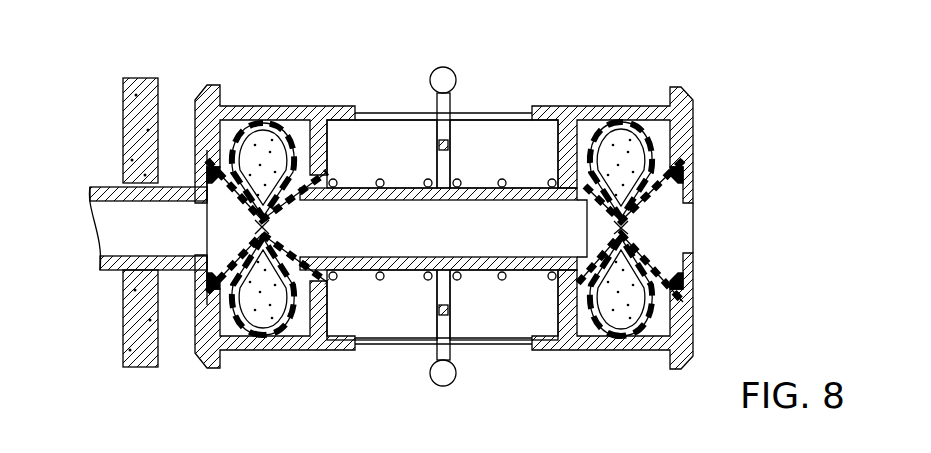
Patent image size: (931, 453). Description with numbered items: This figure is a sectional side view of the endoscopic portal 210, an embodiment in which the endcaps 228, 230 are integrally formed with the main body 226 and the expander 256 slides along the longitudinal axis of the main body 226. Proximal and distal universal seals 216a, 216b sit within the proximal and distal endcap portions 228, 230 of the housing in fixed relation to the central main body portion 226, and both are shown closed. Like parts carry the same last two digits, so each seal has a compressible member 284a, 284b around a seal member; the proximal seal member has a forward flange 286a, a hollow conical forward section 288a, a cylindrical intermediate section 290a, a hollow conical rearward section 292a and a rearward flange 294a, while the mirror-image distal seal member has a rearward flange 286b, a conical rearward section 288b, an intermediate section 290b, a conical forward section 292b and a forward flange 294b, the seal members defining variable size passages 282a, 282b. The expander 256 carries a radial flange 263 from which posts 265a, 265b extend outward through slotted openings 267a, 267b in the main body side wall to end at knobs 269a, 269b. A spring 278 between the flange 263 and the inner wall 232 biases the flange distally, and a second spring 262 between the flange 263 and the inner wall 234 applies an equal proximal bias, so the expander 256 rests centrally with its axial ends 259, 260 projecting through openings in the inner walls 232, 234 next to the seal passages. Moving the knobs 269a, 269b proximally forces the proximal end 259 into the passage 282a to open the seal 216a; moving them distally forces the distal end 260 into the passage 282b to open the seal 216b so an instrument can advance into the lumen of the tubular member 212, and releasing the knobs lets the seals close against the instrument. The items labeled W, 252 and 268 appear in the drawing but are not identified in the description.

The wall W is at (124, 118).
The endoscopic portal 210 is at (797, 171).
The tubular member 212 is at (116, 275).
The proximal universal seal 216a is at (673, 212).
The distal universal seal 216b is at (226, 229).
The main body 226 is at (397, 363).
The proximal endcap 228 is at (650, 358).
The distal endcap 230 is at (230, 355).
The inner wall 232 is at (600, 110).
The inner wall 234 is at (306, 107).
The housing flange 252 is at (196, 108).
The expander 256 is at (359, 181).
The proximal end of expander 259 is at (590, 232).
The distal end of expander 260 is at (300, 231).
The second spring 262 is at (340, 112).
The radial flange 263 is at (453, 175).
The post 265a is at (437, 128).
The post 265b is at (437, 333).
The slotted opening 267a is at (538, 107).
The slotted opening 267b is at (533, 352).
The outer housing wall 268 is at (695, 340).
The knob 269a is at (452, 73).
The knob 269b is at (456, 376).
The spring 278 is at (487, 182).
The variable size passage 282a is at (635, 228).
The variable size passage 282b is at (255, 215).
The compressible member 284a is at (660, 132).
The compressible member 284b is at (240, 124).
The forward flange 286a is at (558, 130).
The rearward flange 286b is at (316, 333).
The hollow conical forward section 288a is at (620, 150).
The hollow conical rearward section 288b is at (295, 338).
The intermediate section 290a is at (660, 182).
The intermediate section 290b is at (263, 216).
The hollow conical rearward section 292a is at (665, 262).
The hollow conical forward section 292b is at (284, 246).
The rearward flange 294a is at (675, 152).
The forward flange 294b is at (207, 300).